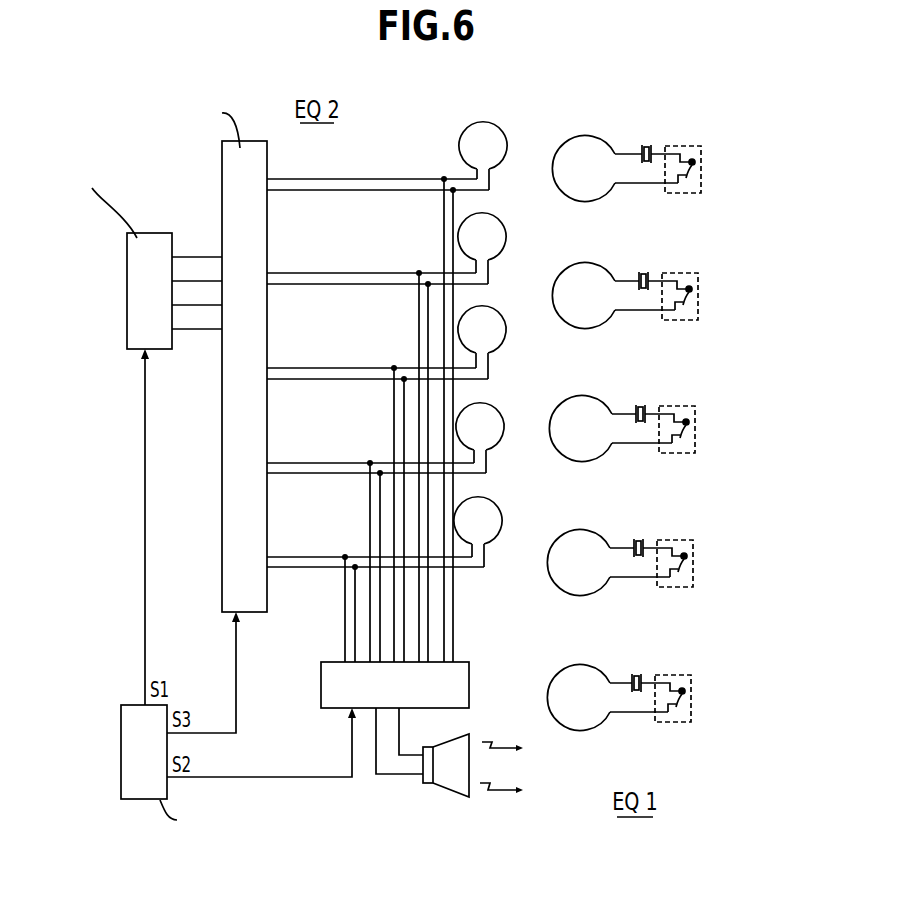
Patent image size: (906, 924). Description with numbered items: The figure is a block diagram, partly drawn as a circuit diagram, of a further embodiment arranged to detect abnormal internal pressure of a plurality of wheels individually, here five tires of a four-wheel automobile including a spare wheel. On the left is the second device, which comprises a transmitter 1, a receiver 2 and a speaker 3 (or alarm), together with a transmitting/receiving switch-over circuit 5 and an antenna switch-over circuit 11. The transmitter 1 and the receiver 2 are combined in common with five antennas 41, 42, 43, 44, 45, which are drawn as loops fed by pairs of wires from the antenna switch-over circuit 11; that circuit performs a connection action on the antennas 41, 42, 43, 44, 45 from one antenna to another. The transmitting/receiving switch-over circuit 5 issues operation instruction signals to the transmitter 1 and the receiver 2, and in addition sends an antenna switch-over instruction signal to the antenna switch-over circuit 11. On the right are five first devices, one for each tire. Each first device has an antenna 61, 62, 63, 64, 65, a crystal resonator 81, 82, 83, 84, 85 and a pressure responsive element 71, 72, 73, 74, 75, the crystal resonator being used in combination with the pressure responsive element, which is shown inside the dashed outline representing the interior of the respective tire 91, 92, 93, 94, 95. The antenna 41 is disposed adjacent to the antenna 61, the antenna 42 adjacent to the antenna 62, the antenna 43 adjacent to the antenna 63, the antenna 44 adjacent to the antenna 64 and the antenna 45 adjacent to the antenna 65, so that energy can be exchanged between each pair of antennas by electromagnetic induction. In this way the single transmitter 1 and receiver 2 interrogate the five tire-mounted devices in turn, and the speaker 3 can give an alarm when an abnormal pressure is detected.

The transmitter 1 is at (153, 236).
The antenna switch-over circuit 11 is at (217, 600).
The receiver 2 is at (332, 709).
The speaker 3 is at (448, 778).
The transmitting/receiving switch-over circuit 5 is at (147, 800).
The antenna 41 is at (501, 133).
The antenna 42 is at (500, 226).
The antenna 43 is at (501, 322).
The antenna 44 is at (499, 418).
The antenna 45 is at (497, 512).
The antenna 61 is at (612, 190).
The antenna 62 is at (612, 317).
The antenna 63 is at (609, 450).
The antenna 64 is at (607, 584).
The antenna 65 is at (607, 719).
The pressure responsive element 71 is at (694, 164).
The pressure responsive element 72 is at (691, 291).
The pressure responsive element 73 is at (688, 424).
The pressure responsive element 74 is at (686, 558).
The pressure responsive element 75 is at (684, 693).
The crystal resonator 81 is at (646, 144).
The crystal resonator 82 is at (647, 271).
The crystal resonator 83 is at (646, 404).
The crystal resonator 84 is at (650, 538).
The crystal resonator 85 is at (646, 673).
The interior of tire 91 is at (700, 146).
The interior of tire 92 is at (697, 273).
The interior of tire 93 is at (694, 408).
The interior of tire 94 is at (692, 546).
The interior of tire 95 is at (690, 677).